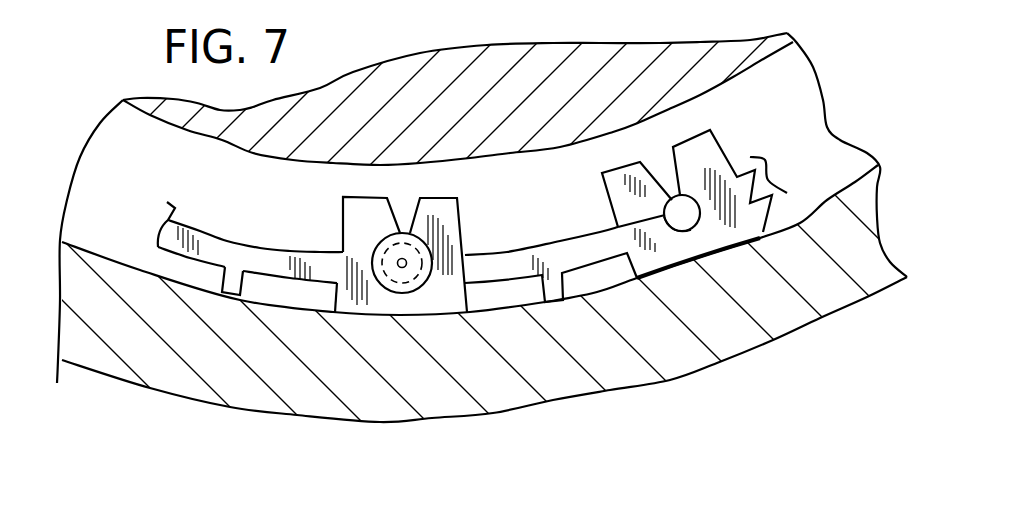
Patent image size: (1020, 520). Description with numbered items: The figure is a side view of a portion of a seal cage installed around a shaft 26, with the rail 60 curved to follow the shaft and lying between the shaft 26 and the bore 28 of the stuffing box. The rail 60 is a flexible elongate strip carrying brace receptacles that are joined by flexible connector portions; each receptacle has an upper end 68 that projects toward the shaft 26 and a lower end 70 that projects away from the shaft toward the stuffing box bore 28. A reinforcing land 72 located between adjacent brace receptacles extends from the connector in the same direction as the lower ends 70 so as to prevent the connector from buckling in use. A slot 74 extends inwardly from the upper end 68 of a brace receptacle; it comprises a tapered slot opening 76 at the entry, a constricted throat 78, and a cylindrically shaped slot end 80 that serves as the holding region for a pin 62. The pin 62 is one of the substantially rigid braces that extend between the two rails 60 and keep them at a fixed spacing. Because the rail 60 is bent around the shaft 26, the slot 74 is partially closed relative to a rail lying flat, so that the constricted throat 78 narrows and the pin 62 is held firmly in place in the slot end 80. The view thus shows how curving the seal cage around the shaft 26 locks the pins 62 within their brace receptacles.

The shaft 26 is at (245, 125).
The bore 28 is at (118, 285).
The rail 60 is at (710, 160).
The pin 62 is at (382, 241).
The upper end 68 is at (640, 162).
The lower end 70 is at (743, 240).
The reinforcing land 72 is at (533, 287).
The slot 74 is at (390, 182).
The tapered slot opening 76 is at (410, 213).
The constricted throat 78 is at (670, 202).
The slot end 80 is at (667, 213).